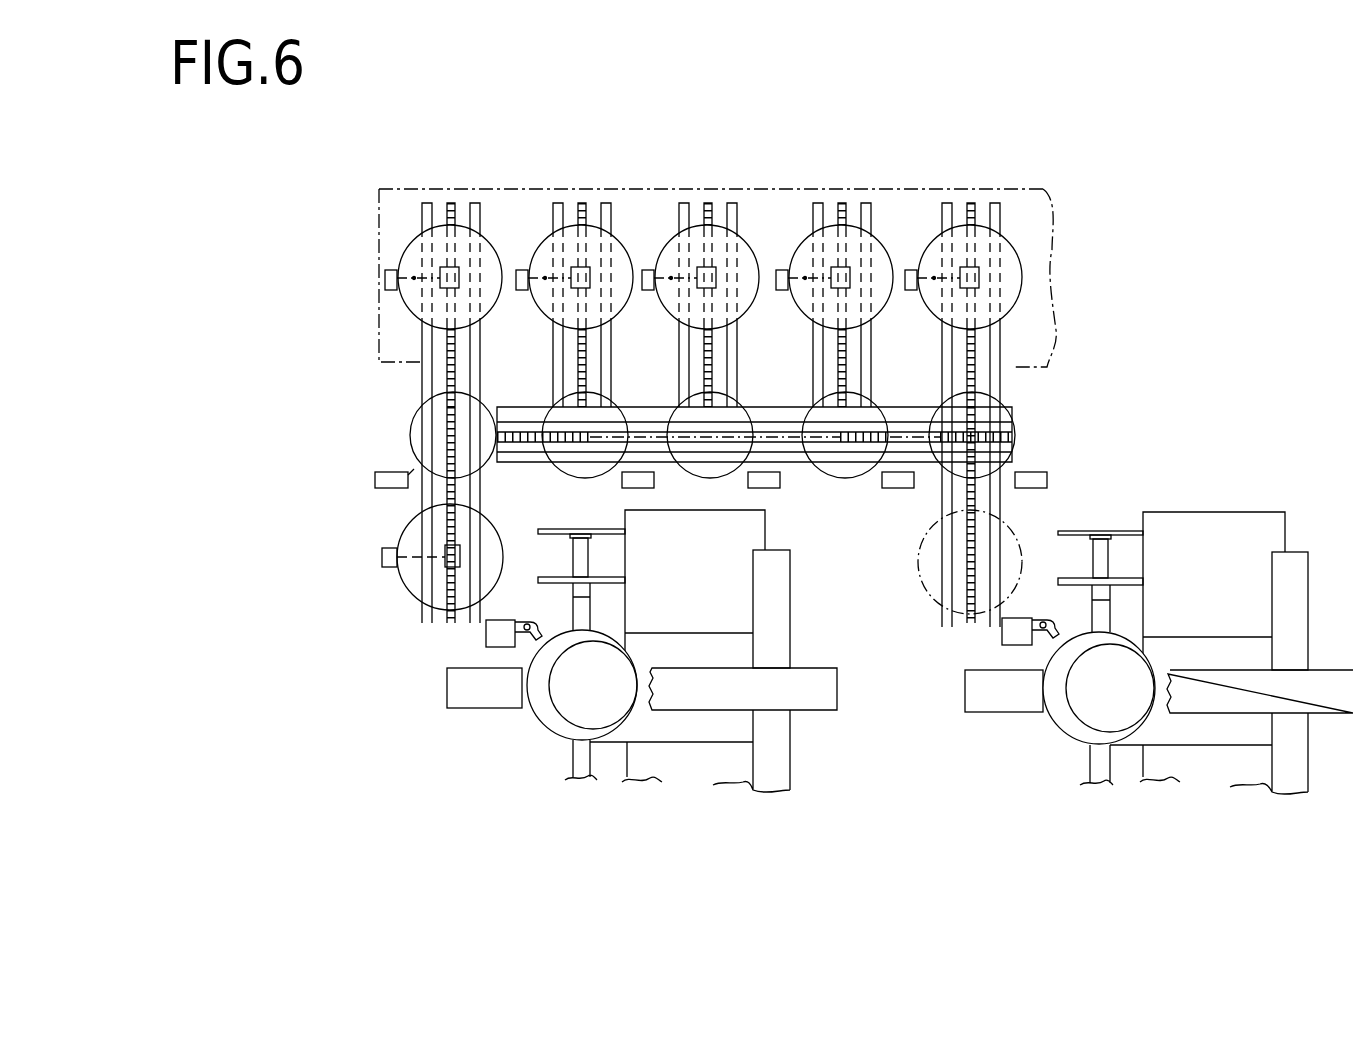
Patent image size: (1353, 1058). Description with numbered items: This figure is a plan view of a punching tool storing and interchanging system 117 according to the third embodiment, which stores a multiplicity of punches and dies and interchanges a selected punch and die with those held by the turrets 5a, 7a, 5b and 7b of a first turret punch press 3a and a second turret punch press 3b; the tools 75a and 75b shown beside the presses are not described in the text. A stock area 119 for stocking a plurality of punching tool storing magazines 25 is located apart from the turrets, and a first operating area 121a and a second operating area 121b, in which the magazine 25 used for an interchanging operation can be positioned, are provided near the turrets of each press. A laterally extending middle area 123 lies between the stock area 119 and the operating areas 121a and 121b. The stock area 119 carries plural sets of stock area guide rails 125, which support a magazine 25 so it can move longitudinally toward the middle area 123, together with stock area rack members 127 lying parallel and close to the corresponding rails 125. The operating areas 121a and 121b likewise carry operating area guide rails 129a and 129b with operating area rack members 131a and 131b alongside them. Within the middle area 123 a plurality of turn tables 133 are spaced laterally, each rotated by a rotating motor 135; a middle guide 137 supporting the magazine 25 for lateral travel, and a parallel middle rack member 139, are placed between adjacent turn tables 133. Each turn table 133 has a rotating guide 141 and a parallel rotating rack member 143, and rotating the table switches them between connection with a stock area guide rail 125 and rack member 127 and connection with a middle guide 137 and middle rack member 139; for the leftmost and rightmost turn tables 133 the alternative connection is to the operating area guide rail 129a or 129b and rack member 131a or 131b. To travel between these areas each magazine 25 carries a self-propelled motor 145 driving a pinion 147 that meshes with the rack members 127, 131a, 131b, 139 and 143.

The first turret punch press 3a is at (795, 611).
The second turret punch press 3b is at (1220, 506).
The turret 5a is at (566, 717).
The turret 5b is at (1083, 720).
The turret 7a is at (543, 718).
The turret 7b is at (1048, 722).
The punching tool storing magazine 25 is at (397, 251).
The first tool 75a is at (499, 622).
The second tool 75b is at (1000, 648).
The punching tool storing and interchanging system 117 is at (1133, 435).
The stock area 119 is at (1100, 363).
The first operating area 121a is at (502, 538).
The second operating area 121b is at (1030, 535).
The middle area 123 is at (807, 518).
The stock area guide rail 125 is at (473, 203).
The stock area rack member 127 is at (457, 348).
The operating area guide rail 129a is at (476, 623).
The operating area guide rail 129b is at (995, 627).
The operating area rack member 131a is at (482, 556).
The operating area rack member 131b is at (977, 562).
The turn table 133 is at (501, 424).
The rotating motor 135 is at (376, 472).
The middle guide 137 is at (546, 396).
The middle rack member 139 is at (523, 440).
The rotating guide 141 is at (475, 400).
The rotating rack member 143 is at (457, 448).
The self-propelled motor 145 is at (782, 268).
The pinion 147 is at (985, 285).